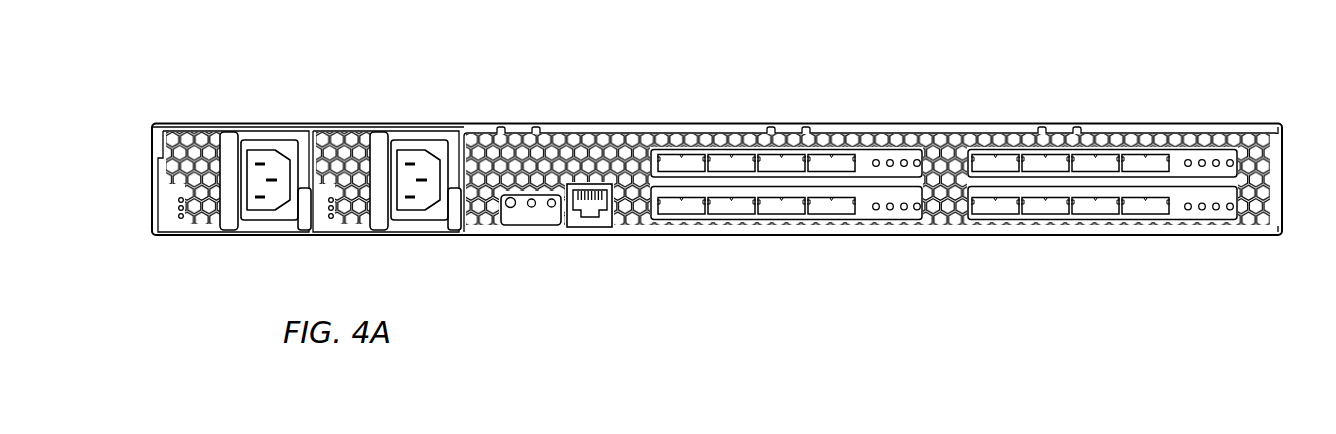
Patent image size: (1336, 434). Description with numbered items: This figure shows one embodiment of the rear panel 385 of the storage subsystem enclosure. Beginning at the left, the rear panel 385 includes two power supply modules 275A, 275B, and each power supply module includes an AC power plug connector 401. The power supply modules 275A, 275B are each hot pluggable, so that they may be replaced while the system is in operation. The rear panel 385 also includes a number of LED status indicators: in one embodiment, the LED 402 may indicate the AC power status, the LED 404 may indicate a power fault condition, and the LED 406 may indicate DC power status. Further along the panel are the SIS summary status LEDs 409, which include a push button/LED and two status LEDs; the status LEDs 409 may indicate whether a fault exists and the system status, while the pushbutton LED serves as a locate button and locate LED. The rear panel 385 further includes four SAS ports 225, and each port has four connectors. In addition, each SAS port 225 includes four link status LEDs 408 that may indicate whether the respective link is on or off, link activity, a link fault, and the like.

The rear panel 385 is at (1083, 78).
The power supply module 275A is at (278, 140).
The power supply module 275B is at (418, 137).
The AC power plug connector 401 is at (280, 210).
The LED 402 is at (180, 217).
The LED 404 is at (180, 208).
The LED 406 is at (180, 199).
The link status LEDs 408 is at (878, 157).
The SIS summary status LEDs 409 is at (531, 212).
The SAS ports 225 is at (973, 210).